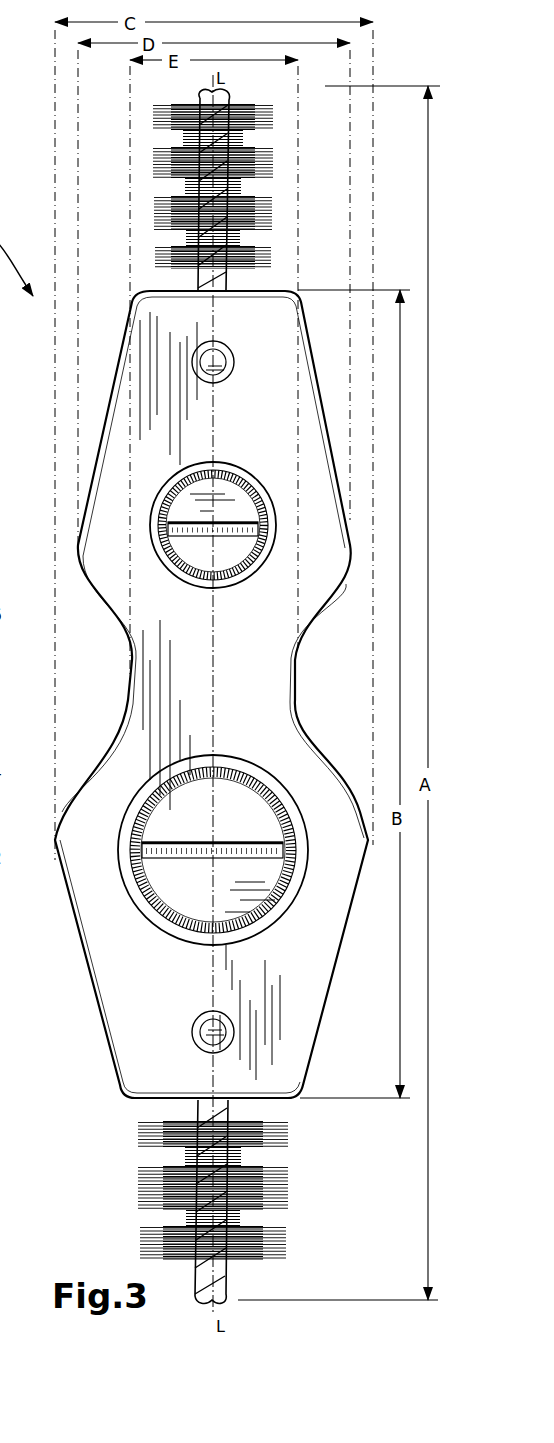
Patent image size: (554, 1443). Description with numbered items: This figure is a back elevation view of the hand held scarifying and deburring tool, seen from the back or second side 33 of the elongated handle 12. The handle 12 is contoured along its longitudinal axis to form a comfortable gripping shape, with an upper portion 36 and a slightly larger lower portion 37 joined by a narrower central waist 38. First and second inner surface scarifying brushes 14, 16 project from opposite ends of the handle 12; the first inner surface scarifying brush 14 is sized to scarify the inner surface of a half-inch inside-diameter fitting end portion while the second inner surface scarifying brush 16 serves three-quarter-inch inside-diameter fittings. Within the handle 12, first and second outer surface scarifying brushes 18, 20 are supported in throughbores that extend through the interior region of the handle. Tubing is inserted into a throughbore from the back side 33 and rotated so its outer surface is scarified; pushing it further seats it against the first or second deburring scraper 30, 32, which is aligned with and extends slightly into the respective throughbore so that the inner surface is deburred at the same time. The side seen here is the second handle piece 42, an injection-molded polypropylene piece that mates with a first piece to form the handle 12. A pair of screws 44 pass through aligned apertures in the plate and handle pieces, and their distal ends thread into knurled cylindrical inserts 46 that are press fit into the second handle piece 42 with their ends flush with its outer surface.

The elongated handle 12 is at (192, 694).
The first inner surface scarifying brush 14 is at (148, 172).
The second inner surface scarifying brush 16 is at (300, 1177).
The first outer surface scarifying brush 18 is at (146, 540).
The second outer surface scarifying brush 20 is at (158, 875).
The first deburring scraper 30 is at (172, 560).
The second deburring scraper 32 is at (145, 822).
The back or second side 33 is at (252, 693).
The upper portion 36 is at (163, 398).
The lower portion 37 is at (100, 915).
The central waist 38 is at (152, 672).
The second handle piece 42 is at (325, 683).
The screws 44 is at (218, 360).
The cylindrical inserts 46 is at (195, 362).